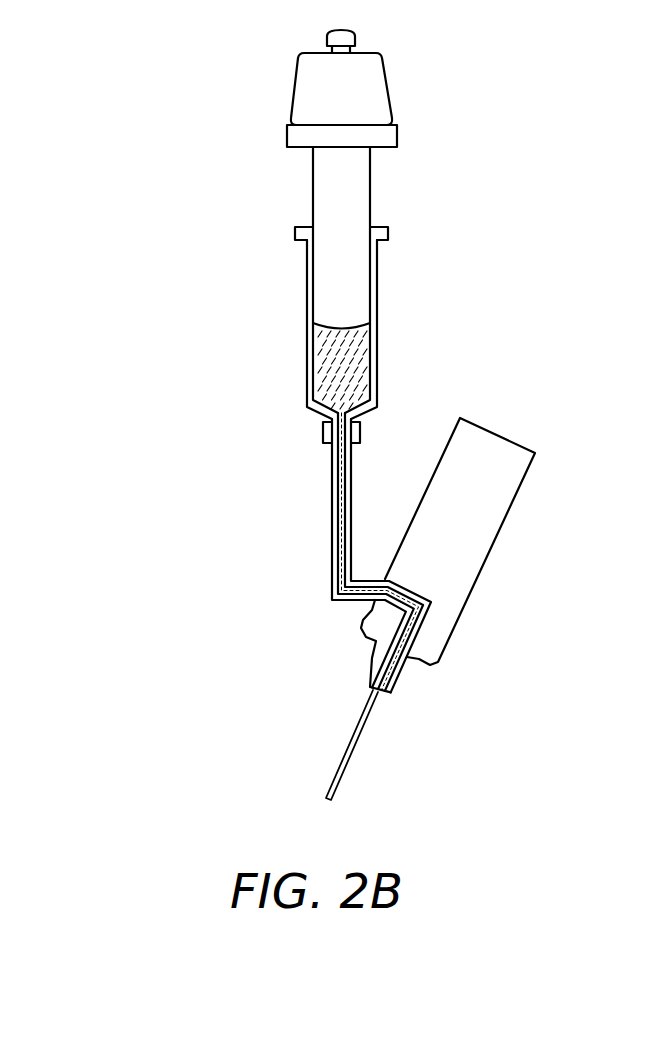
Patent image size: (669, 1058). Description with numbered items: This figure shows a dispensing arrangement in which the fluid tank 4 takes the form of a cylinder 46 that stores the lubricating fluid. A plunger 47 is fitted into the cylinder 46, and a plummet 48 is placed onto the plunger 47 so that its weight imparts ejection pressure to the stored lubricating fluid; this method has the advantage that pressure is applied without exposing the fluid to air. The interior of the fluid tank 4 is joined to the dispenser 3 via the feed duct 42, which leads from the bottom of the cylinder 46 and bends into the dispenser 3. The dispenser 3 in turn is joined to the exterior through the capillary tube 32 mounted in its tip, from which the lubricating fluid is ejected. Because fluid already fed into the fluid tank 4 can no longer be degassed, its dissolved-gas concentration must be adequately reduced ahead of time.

The fluid tank 4 is at (320, 237).
The plummet 48 is at (355, 83).
The plunger 47 is at (347, 200).
The cylinder 46 is at (306, 375).
The feed duct 42 is at (330, 527).
The dispenser 3 is at (497, 620).
The capillary tube 32 is at (367, 752).